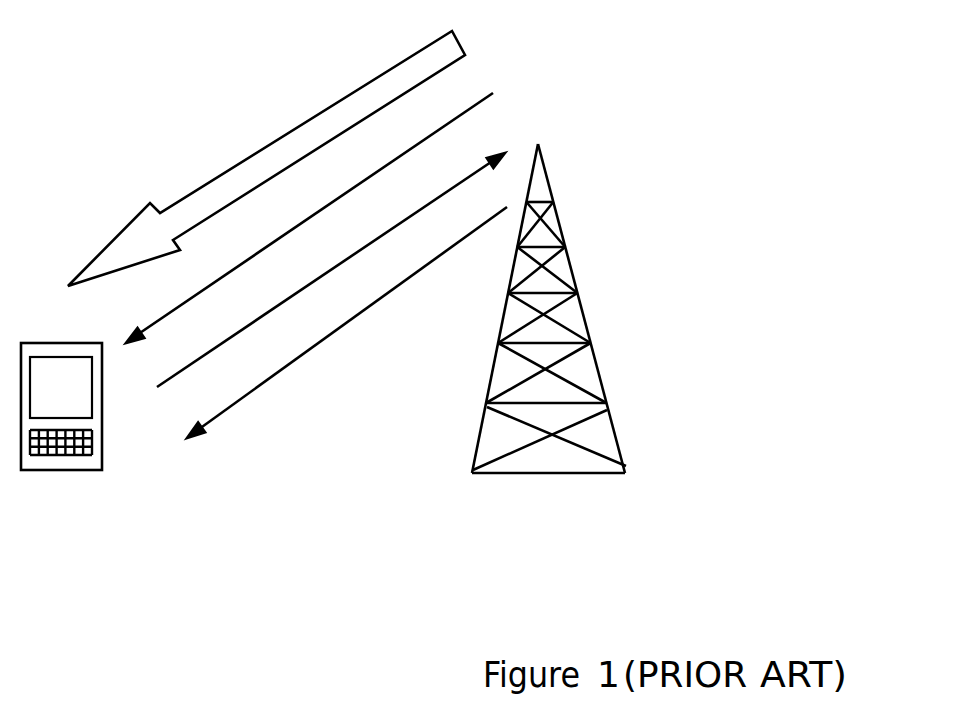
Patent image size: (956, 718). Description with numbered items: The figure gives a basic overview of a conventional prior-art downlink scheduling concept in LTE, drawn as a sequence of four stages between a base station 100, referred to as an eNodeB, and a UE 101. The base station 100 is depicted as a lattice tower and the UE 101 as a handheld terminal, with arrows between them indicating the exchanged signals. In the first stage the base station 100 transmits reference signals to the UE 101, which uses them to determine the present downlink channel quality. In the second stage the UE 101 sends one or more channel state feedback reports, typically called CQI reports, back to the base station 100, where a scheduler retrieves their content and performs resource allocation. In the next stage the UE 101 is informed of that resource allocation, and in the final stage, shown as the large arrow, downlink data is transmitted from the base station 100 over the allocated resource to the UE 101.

The base station 100 is at (553, 467).
The UE 101 is at (82, 472).